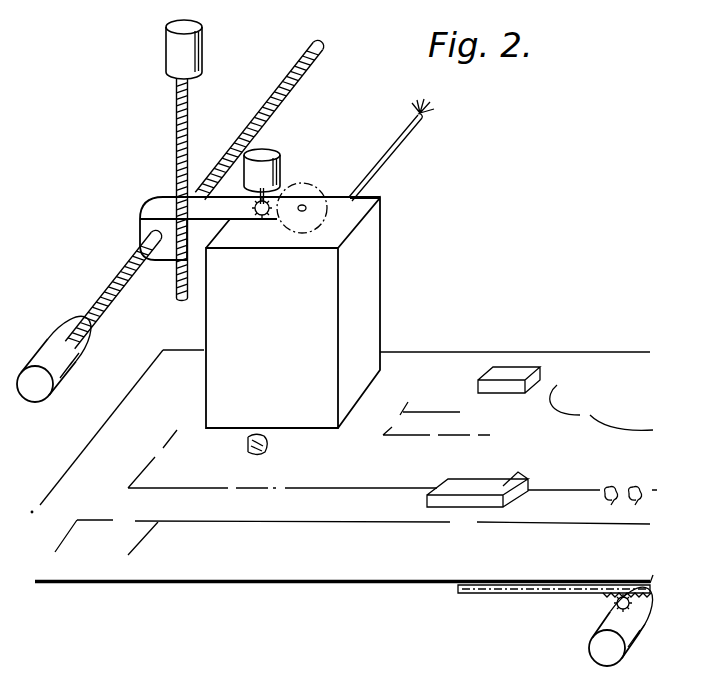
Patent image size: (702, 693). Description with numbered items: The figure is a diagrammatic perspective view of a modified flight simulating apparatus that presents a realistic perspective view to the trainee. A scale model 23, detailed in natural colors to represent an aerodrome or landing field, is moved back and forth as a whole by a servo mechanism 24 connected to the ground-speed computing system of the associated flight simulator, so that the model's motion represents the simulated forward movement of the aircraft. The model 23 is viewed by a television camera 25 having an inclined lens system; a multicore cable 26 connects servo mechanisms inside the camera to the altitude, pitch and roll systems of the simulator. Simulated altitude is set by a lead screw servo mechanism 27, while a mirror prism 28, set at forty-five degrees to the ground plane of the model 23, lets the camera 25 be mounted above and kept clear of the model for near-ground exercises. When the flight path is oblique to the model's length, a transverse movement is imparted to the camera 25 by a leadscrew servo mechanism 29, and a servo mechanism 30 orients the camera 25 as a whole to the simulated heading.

The scale model 23 is at (275, 585).
The servo mechanism 24 is at (598, 631).
The television camera 25 is at (383, 244).
The multicore cable 26 is at (418, 136).
The lead screw servo mechanism 27 is at (166, 29).
The mirror prism 28 is at (244, 447).
The leadscrew servo mechanism 29 is at (36, 396).
The servo mechanism 30 is at (279, 162).